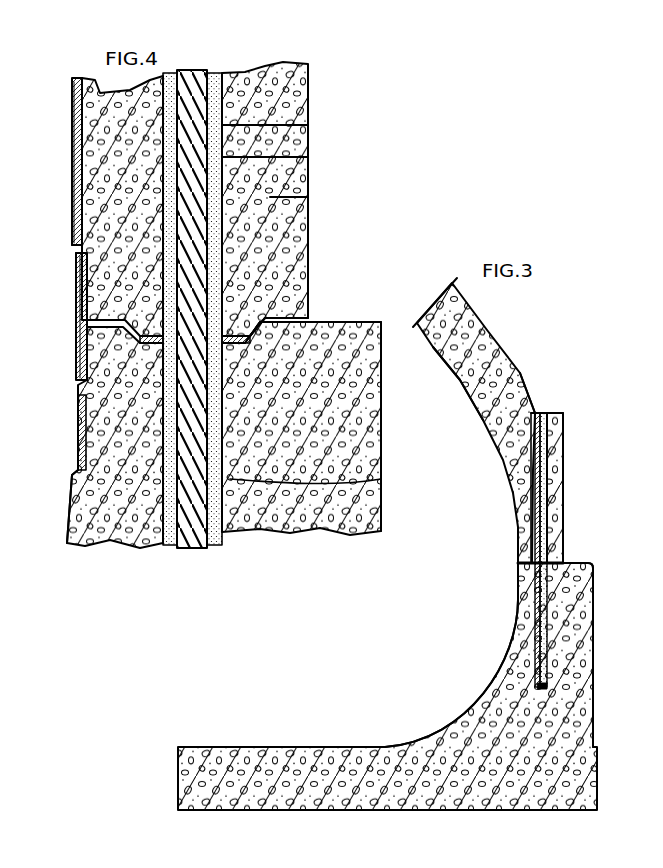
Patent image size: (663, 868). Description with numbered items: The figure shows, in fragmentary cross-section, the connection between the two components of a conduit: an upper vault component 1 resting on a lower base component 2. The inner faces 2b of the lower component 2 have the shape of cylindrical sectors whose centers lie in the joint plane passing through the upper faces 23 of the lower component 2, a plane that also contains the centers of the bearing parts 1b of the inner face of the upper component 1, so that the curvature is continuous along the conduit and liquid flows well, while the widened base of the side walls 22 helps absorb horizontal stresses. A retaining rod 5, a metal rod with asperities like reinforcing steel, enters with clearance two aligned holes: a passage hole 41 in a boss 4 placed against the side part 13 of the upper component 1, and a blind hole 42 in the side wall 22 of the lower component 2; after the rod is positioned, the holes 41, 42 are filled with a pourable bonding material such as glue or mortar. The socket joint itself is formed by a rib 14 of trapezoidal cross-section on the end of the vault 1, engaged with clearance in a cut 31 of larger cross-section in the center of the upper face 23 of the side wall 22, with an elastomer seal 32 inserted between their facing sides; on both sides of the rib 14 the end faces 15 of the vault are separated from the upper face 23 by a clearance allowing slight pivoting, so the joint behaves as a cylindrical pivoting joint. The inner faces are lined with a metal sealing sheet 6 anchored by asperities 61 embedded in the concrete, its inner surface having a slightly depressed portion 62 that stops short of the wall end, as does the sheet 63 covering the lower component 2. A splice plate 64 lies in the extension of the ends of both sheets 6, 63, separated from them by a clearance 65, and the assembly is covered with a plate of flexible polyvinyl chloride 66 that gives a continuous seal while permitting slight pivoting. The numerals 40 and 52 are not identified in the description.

In FIG. 3, the upper component 1 is at (478, 328).
In FIG. 3, the bearing parts 1b is at (471, 401).
In FIG. 3, the lower component 2 is at (381, 747).
In FIG. 3, the inner faces 2b is at (503, 652).
In FIG. 3, the boss 4 is at (563, 447).
In FIG. 3, the top of anchoring block 40 is at (551, 415).
In FIG. 4, the passage hole 41 is at (292, 125).
In FIG. 3, the passage hole 41 is at (563, 512).
In FIG. 4, the blind hole 42 is at (381, 479).
In FIG. 3, the blind hole 42 is at (548, 607).
In FIG. 4, the retaining rod 5 is at (190, 550).
In FIG. 3, the retaining rod 5 is at (545, 556).
In FIG. 4, the sleeve 52 is at (172, 548).
In FIG. 3, the sleeve 52 is at (543, 488).
In FIG. 4, the metal sealing sheet 6 is at (72, 98).
In FIG. 4, the asperities 61 is at (76, 138).
In FIG. 4, the slightly depressed portion 62 is at (77, 250).
In FIG. 4, the sheet 63 is at (74, 478).
In FIG. 4, the splice plate 64 is at (90, 346).
In FIG. 4, the clearance 65 is at (87, 290).
In FIG. 4, the plate of flexible polyvinyl chloride 66 is at (87, 323).
In FIG. 4, the side part 13 is at (308, 197).
In FIG. 3, the side part 13 is at (512, 398).
In FIG. 4, the rib 14 is at (265, 307).
In FIG. 4, the end faces 15 is at (287, 320).
In FIG. 4, the side wall 22 is at (295, 432).
In FIG. 3, the side wall 22 is at (593, 690).
In FIG. 4, the upper face 23 is at (318, 332).
In FIG. 4, the cut 31 is at (260, 332).
In FIG. 4, the elastomer seal 32 is at (233, 328).